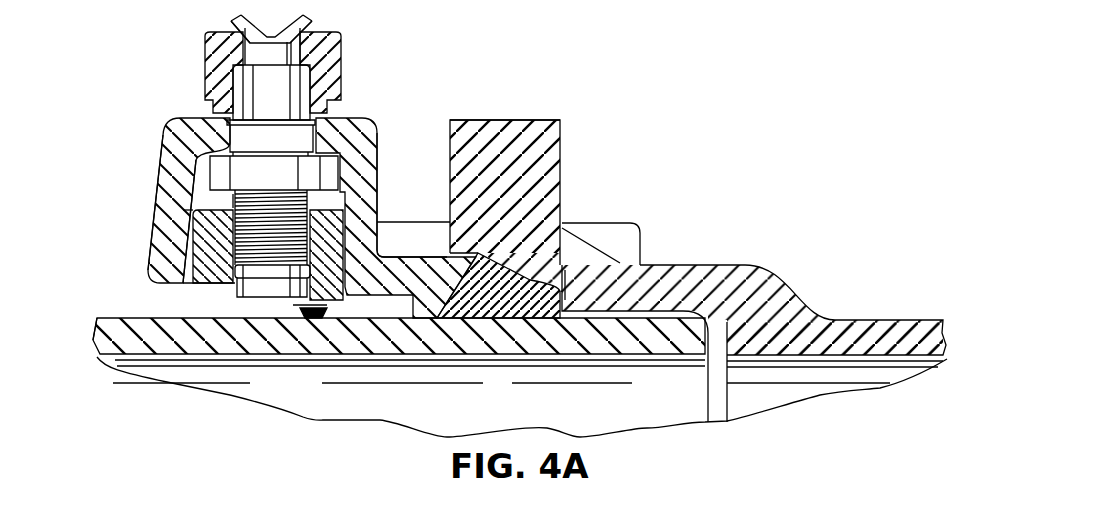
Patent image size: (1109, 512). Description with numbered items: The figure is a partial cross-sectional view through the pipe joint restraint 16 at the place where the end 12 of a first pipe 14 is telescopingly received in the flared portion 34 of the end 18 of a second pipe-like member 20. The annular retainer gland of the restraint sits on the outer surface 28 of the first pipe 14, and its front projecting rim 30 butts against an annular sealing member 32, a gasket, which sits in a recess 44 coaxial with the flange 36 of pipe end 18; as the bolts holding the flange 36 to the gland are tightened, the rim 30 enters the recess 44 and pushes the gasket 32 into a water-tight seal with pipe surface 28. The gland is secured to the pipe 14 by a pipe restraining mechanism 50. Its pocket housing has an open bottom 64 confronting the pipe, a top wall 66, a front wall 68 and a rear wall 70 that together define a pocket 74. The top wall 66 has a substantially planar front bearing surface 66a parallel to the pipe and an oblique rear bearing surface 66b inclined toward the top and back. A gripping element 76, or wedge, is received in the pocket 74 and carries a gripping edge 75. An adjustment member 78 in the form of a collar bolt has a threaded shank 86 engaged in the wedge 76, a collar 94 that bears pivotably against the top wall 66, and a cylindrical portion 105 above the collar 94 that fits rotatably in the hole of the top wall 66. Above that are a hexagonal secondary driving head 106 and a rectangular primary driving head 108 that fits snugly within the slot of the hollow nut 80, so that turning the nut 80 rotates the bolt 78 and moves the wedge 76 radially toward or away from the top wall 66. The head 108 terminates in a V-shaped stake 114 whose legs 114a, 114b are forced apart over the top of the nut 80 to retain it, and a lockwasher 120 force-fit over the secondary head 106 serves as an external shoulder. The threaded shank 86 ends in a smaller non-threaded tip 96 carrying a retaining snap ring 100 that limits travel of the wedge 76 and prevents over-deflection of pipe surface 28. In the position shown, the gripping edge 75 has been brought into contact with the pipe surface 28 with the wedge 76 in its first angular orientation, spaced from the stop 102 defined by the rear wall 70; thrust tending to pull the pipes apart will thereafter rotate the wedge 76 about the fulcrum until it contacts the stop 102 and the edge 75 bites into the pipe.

The end of first pipe 12 is at (663, 345).
The first pipe 14 is at (512, 363).
The pipe joint restraint 16 is at (410, 105).
The end of second pipe-like member 18 is at (681, 258).
The second pipe-like member 20 is at (882, 318).
The outer surface of first pipe 28 is at (97, 340).
The front projecting rim 30 is at (410, 256).
The annular sealing member 32 is at (500, 275).
The flared portion 34 is at (693, 343).
The flange 36 is at (528, 119).
The recess 44 is at (557, 277).
The pipe restraining mechanism 50 is at (158, 126).
The open bottom 64 is at (185, 289).
The top wall 66 is at (280, 197).
The front bearing surface 66a is at (365, 166).
The rear bearing surface 66b is at (168, 150).
The front wall 68 is at (378, 143).
The rear wall 70 is at (151, 247).
The pocket 74 is at (180, 227).
The gripping edge 75 is at (300, 312).
The gripping element 76 is at (192, 264).
The adjustment member 78 is at (160, 182).
The hollow nut 80 is at (205, 43).
The threaded shank portion 86 is at (216, 195).
The collar 94 is at (338, 181).
The non-threaded tip 96 is at (263, 297).
The retaining snap ring 100 is at (240, 296).
The stop 102 is at (200, 152).
The cylindrical portion 105 is at (258, 132).
The hexagonal secondary driving head 106 is at (300, 87).
The primary driving head 108 is at (341, 43).
The V-shaped stake 114 is at (265, 28).
The leg of V-shaped stake 114a is at (235, 22).
The leg of V-shaped stake 114b is at (308, 19).
The lockwasher 120 is at (323, 108).